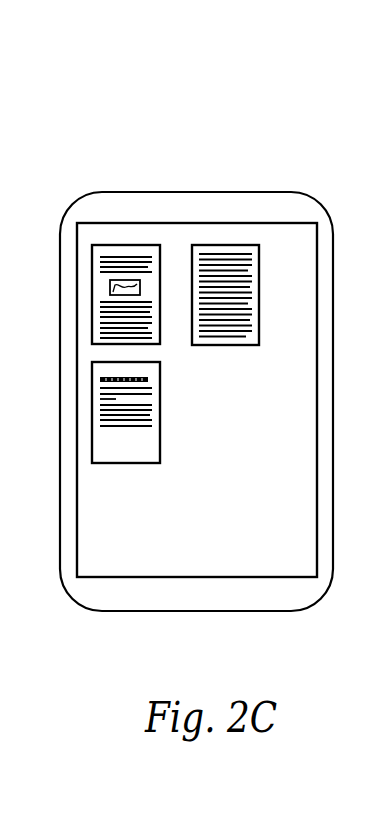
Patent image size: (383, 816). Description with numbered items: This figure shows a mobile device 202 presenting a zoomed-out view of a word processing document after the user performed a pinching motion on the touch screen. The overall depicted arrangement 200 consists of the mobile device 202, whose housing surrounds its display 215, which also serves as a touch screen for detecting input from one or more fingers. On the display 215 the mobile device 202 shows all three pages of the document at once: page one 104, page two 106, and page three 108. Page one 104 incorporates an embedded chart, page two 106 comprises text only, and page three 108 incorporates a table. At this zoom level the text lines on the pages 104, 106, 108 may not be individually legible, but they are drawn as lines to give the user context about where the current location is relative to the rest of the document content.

The mobile computing device 200 is at (238, 81).
The mobile device 202 is at (207, 192).
The display 215 is at (318, 290).
The page one 104 is at (160, 340).
The page two 106 is at (262, 294).
The page three 108 is at (115, 463).